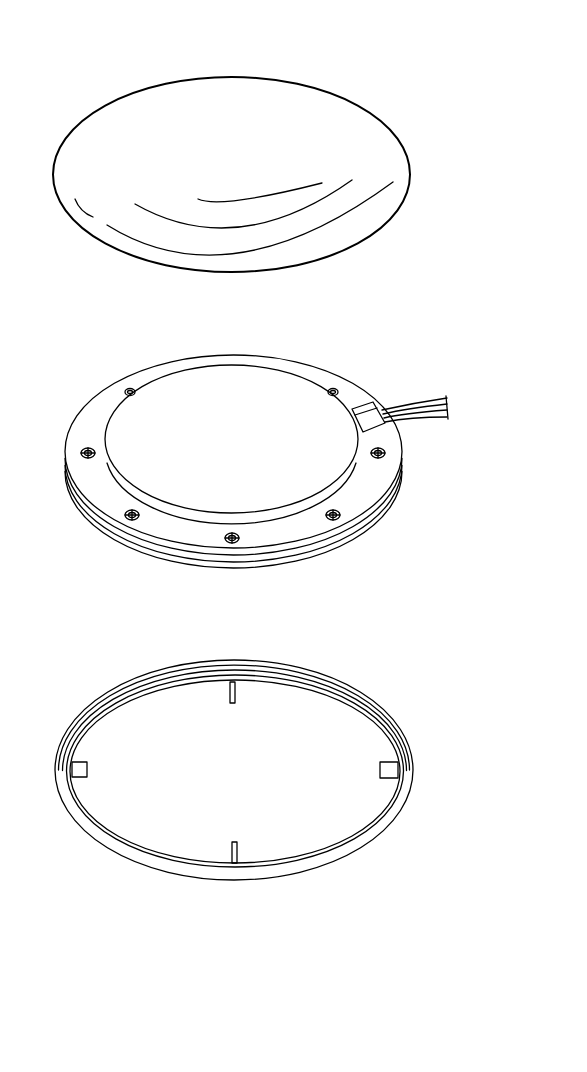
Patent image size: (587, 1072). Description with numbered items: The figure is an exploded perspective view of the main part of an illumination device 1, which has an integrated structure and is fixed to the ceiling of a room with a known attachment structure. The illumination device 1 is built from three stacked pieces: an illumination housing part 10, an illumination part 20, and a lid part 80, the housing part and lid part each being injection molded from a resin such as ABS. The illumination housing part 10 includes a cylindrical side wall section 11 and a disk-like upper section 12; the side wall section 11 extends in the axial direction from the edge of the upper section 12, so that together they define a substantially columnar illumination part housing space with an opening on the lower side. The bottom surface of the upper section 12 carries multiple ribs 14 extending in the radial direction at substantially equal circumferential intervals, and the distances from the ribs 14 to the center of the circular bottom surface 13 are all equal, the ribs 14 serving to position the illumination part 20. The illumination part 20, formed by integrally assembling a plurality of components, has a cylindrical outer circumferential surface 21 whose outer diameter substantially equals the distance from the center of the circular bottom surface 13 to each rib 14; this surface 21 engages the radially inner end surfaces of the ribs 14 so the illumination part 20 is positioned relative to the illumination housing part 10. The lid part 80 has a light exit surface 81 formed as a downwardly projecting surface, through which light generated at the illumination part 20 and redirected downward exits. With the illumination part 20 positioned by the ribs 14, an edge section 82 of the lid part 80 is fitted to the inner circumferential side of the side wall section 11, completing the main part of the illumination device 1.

The illumination device 1 is at (293, 73).
The lid part 80 is at (362, 109).
The light exit surface 81 is at (375, 147).
The edge section 82 is at (147, 259).
The illumination part 20 is at (327, 372).
The cylindrical outer circumferential surface 21 is at (393, 492).
The illumination housing part 10 is at (358, 685).
The side wall section 11 is at (260, 876).
The upper section 12 is at (340, 733).
The circular bottom surface 13 is at (348, 805).
The ribs 14 is at (238, 693).